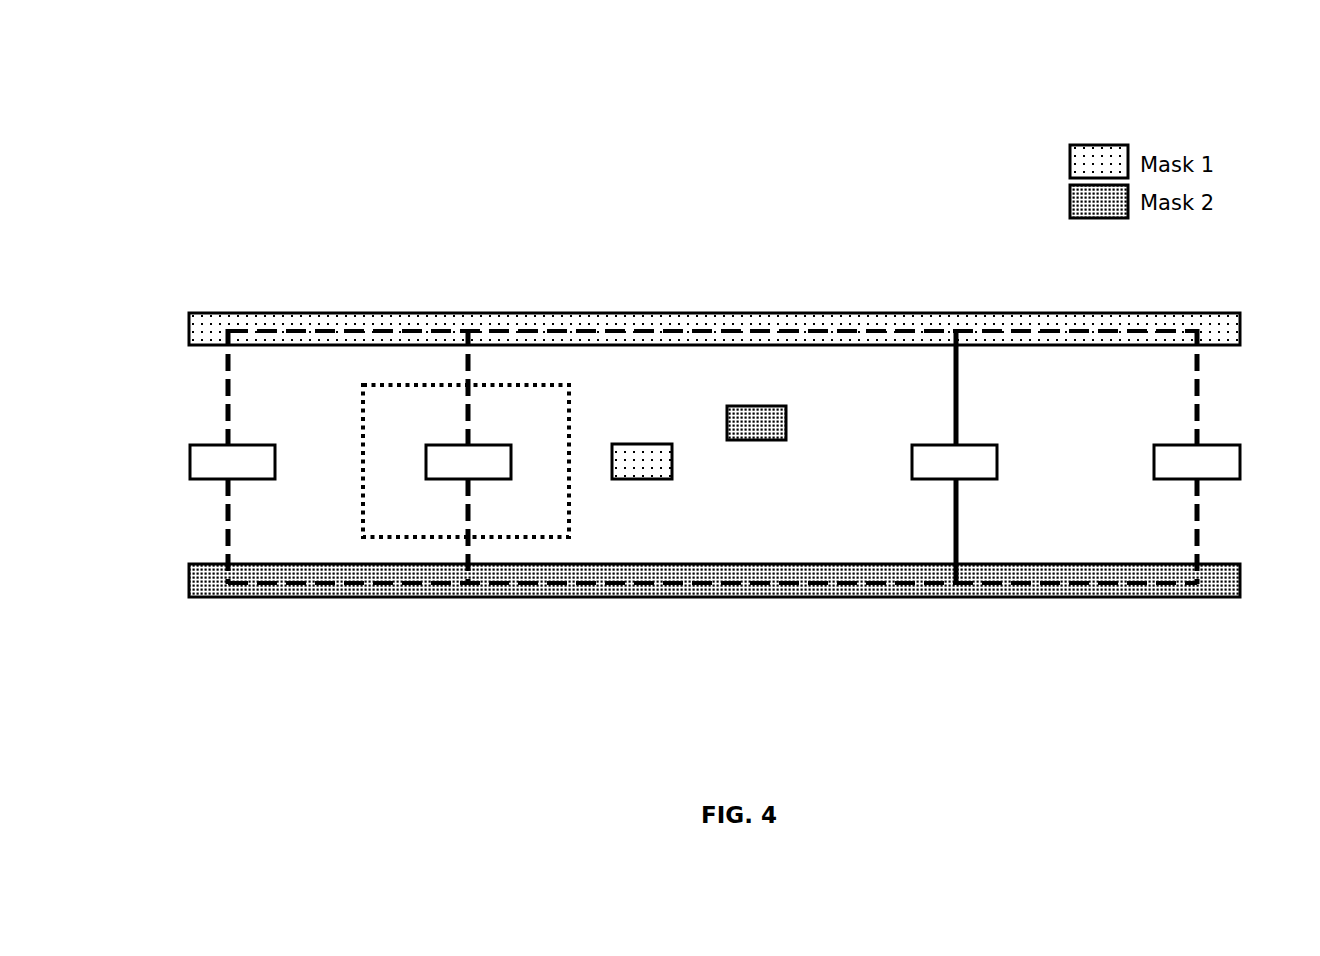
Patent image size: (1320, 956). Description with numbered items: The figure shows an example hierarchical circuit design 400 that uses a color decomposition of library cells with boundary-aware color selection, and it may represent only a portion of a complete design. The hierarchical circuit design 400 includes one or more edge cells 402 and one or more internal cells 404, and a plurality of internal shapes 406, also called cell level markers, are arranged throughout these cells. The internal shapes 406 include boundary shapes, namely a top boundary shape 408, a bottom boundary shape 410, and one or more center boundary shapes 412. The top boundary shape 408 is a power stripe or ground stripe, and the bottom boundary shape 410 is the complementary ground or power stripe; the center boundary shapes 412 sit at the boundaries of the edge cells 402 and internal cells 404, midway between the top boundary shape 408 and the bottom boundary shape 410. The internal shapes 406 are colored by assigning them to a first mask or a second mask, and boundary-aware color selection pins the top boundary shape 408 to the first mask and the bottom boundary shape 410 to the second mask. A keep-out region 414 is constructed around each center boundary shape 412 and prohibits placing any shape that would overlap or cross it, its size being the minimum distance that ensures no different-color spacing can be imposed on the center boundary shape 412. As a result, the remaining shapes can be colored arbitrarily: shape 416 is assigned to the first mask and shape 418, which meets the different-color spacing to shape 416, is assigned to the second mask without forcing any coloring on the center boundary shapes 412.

The hierarchical circuit design 400 is at (207, 90).
The edge cell 402 is at (339, 590).
The internal cell 404 is at (692, 586).
The internal shapes 406 is at (622, 432).
The top boundary shape 408 is at (228, 313).
The bottom boundary shape 410 is at (190, 563).
The center boundary shapes 412 is at (190, 445).
The keep-out region 414 is at (419, 540).
The shape 416 is at (643, 444).
The shape 418 is at (755, 406).